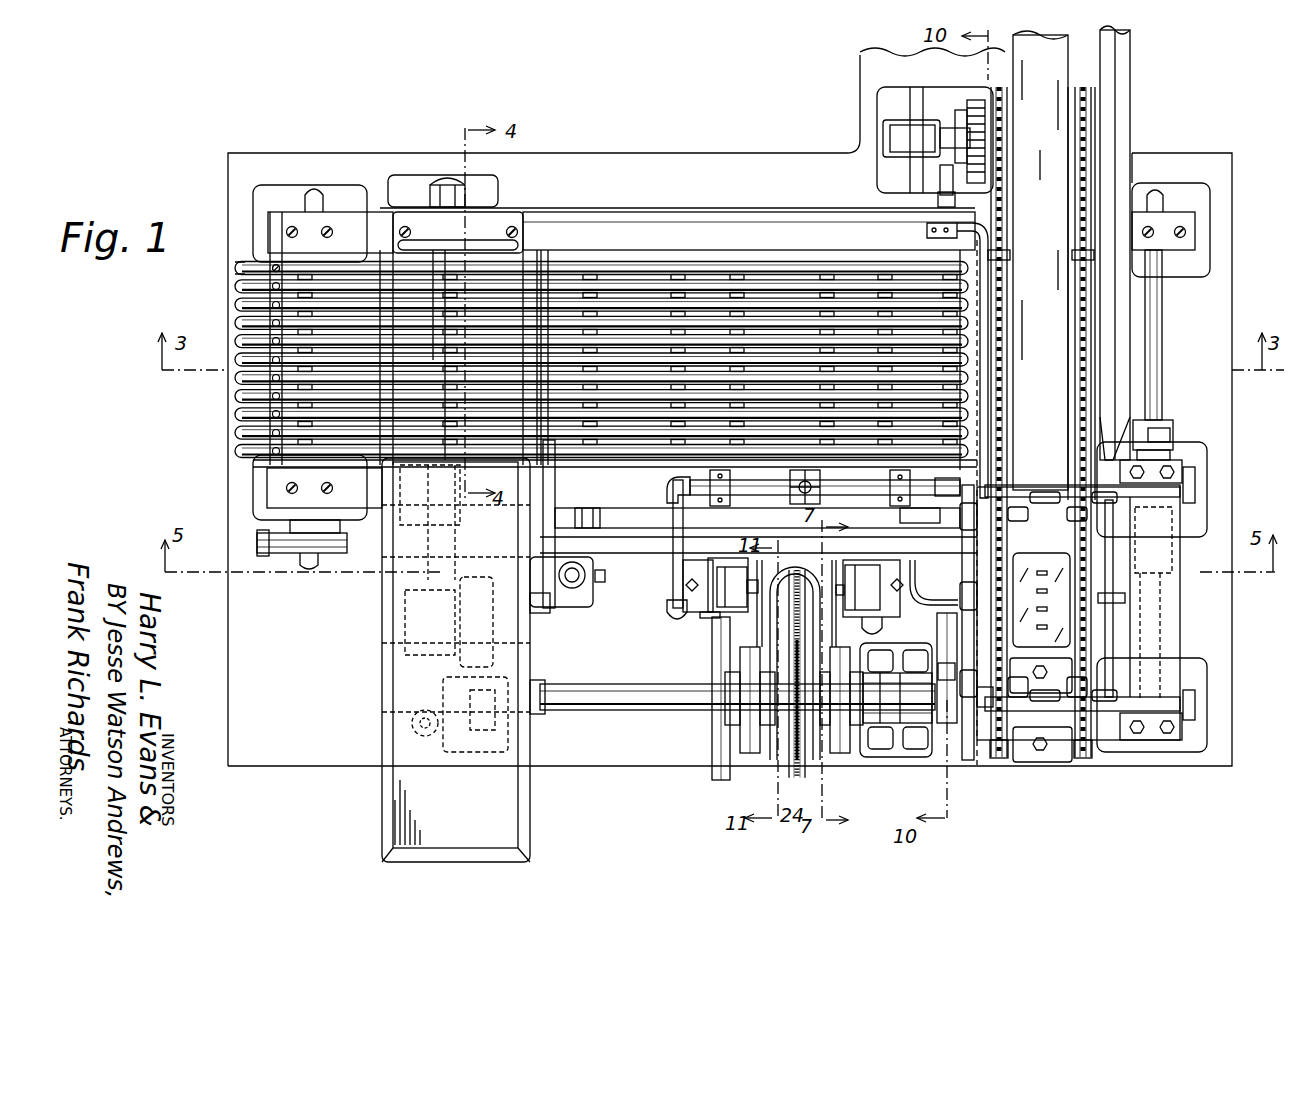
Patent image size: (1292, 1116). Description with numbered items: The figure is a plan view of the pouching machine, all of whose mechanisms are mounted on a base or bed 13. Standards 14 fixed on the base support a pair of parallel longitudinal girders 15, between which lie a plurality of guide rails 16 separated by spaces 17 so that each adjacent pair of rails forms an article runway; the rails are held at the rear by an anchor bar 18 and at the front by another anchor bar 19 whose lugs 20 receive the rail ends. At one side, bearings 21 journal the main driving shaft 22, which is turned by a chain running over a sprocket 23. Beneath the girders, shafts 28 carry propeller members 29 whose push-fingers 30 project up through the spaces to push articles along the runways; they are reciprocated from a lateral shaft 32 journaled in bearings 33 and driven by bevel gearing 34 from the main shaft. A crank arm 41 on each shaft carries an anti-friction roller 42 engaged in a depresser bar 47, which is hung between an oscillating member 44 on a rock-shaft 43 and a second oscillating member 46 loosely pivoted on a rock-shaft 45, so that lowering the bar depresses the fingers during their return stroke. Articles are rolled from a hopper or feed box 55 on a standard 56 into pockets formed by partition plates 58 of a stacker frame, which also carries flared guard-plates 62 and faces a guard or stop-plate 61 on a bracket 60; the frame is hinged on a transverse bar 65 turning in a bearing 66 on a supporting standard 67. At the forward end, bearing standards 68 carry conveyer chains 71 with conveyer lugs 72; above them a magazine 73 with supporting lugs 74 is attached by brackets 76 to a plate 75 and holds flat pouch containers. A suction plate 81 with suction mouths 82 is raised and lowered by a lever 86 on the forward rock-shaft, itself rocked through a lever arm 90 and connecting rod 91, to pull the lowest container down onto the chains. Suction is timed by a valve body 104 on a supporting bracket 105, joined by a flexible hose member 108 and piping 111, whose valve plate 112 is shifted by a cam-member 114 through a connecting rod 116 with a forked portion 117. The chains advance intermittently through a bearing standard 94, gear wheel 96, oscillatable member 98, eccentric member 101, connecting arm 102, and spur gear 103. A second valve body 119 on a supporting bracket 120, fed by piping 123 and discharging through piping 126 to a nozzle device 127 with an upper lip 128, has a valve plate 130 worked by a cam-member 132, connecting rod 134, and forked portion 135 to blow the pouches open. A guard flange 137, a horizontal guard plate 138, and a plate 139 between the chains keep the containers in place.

The base or bed 13 is at (643, 153).
The standards 14 is at (315, 192).
The longitudinal bars or girders 15 is at (641, 212).
The guide rails 16 is at (795, 330).
The spaces 17 is at (645, 325).
The anchor bar 18 is at (243, 296).
The anchor bar 19 is at (975, 223).
The lugs 20 is at (932, 310).
The bearings 21 is at (555, 686).
The main driving shaft 22 is at (615, 685).
The sprocket 23 is at (800, 760).
The shaft 28 is at (615, 330).
The propeller member 29 is at (606, 311).
The push-fingers 30 is at (384, 281).
The shaft 32 is at (428, 575).
The bearings 33 is at (425, 195).
The bevel gearing 34 is at (440, 690).
The crank arm 41 is at (577, 524).
The anti-friction roller 42 is at (565, 528).
The rock-shaft 43 is at (310, 568).
The oscillating member 44 is at (285, 560).
The rock-shaft 45 is at (1162, 347).
The oscillating member 46 is at (1136, 540).
The depresser bar 47 is at (257, 540).
The hopper or feed box 55 is at (456, 660).
The standard 56 is at (425, 736).
The partition plates 58 is at (430, 343).
The bracket 60 is at (505, 212).
The guard or stop-plate 61 is at (480, 255).
The guard-plate 62 is at (537, 265).
The transverse bar or shaft 65 is at (553, 485).
The bearing 66 is at (566, 600).
The supporting standard 67 is at (587, 585).
The bearing standards 68 is at (1036, 762).
The conveyer chains 71 is at (1075, 152).
The conveyer lugs 72 is at (1072, 254).
The magazine 73 is at (1022, 520).
The supporting lugs 74 is at (1070, 535).
The plate 75 is at (1164, 615).
The brackets 76 is at (1150, 490).
The suction plate 81 is at (1041, 600).
The suction mouths 82 is at (1047, 592).
The lever 86 is at (1125, 560).
The lever arm 90 is at (1155, 422).
The connecting rod 91 is at (1168, 432).
The bearing standard 94 is at (895, 120).
The gear wheel 96 is at (975, 100).
The oscillatable member 98 is at (958, 103).
The eccentric member 101 is at (948, 725).
The connecting arm 102 is at (920, 521).
The spur gear 103 is at (926, 163).
The valve body 104 is at (882, 628).
The supporting bracket 105 is at (912, 605).
The flexible hose member 108 is at (923, 663).
The piping 111 is at (878, 663).
The valve plate 112 is at (850, 572).
The cam-member 114 is at (862, 753).
The connecting rod 116 is at (825, 630).
The forked portion 117 is at (838, 753).
The valve body 119 is at (712, 612).
The supporting bracket 120 is at (705, 615).
The piping 123 is at (712, 740).
The piping 126 is at (765, 496).
The nozzle device 127 is at (948, 486).
The upper transverse lip 128 is at (1000, 470).
The valve plate 130 is at (740, 612).
The cam-member 132 is at (751, 753).
The connecting rod 134 is at (760, 612).
The forked portion 135 is at (774, 753).
The stop or guard flange 137 is at (1130, 313).
The horizontal guard plate 138 is at (1000, 320).
The plate 139 is at (1054, 265).